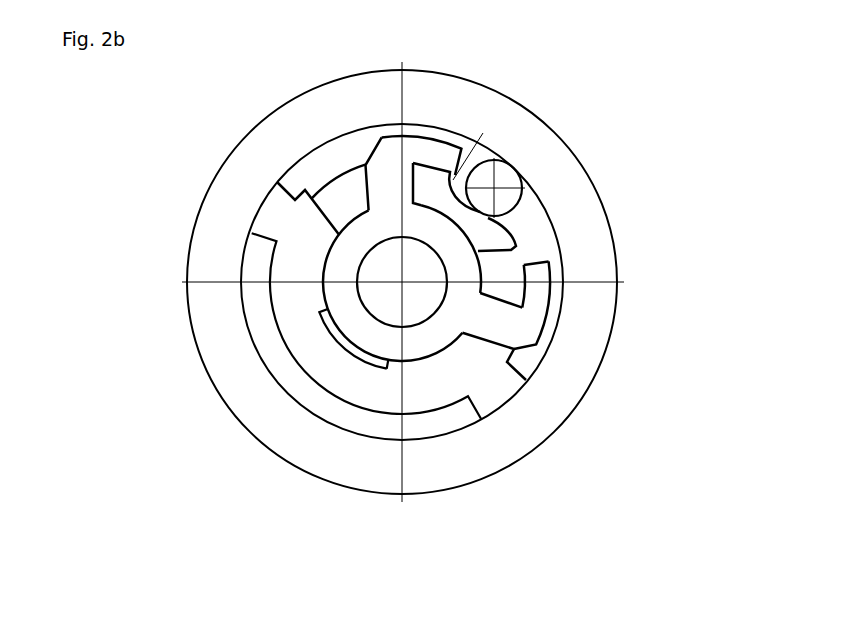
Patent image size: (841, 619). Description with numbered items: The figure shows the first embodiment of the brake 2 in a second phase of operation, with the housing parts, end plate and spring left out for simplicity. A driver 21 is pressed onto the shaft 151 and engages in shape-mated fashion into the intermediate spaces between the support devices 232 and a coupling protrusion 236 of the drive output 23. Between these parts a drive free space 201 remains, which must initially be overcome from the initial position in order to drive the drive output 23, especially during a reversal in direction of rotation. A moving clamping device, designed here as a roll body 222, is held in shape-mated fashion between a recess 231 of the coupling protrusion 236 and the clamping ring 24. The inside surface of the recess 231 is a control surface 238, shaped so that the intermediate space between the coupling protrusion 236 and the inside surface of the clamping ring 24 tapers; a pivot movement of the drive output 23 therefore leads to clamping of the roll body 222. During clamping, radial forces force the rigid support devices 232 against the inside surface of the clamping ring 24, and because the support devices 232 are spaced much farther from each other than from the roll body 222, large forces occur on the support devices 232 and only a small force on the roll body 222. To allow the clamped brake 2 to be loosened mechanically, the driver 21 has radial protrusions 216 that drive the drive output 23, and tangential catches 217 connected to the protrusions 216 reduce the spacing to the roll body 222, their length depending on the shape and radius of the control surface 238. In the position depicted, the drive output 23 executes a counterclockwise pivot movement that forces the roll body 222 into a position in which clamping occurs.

The brake 2 is at (201, 519).
The driver 21 is at (319, 272).
The drive output 23 is at (272, 333).
The clamping ring 24 is at (256, 403).
The shaft 151 is at (422, 298).
The drive free space 201 is at (340, 192).
The radial protrusions 216 is at (390, 170).
The tangential catches 217 is at (440, 150).
The roll body 222 is at (512, 192).
The recess 231 is at (477, 163).
The support devices 232 is at (272, 202).
The coupling protrusion 236 is at (503, 232).
The control surface 238 is at (458, 177).